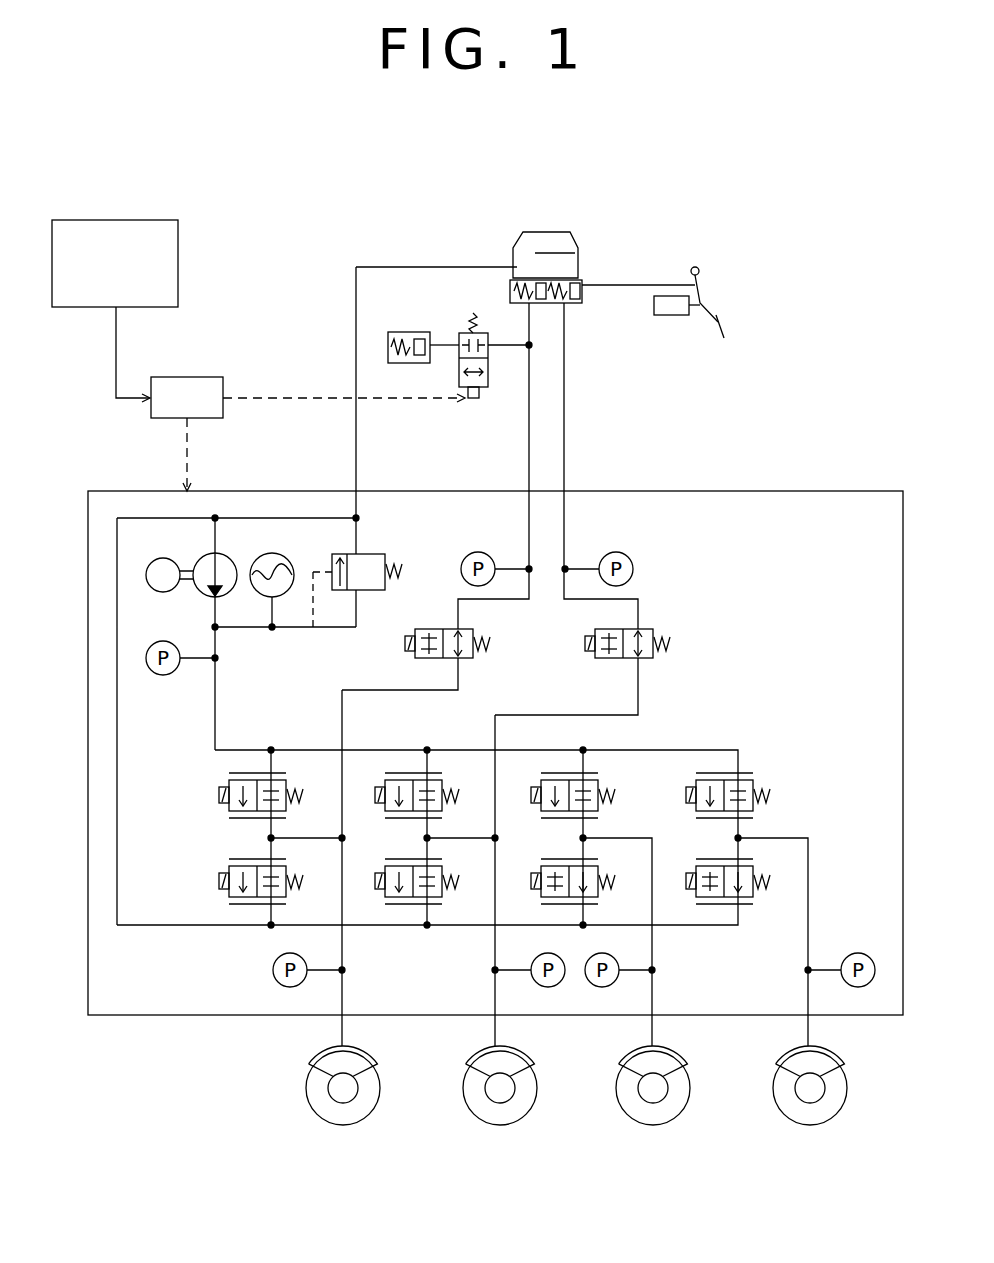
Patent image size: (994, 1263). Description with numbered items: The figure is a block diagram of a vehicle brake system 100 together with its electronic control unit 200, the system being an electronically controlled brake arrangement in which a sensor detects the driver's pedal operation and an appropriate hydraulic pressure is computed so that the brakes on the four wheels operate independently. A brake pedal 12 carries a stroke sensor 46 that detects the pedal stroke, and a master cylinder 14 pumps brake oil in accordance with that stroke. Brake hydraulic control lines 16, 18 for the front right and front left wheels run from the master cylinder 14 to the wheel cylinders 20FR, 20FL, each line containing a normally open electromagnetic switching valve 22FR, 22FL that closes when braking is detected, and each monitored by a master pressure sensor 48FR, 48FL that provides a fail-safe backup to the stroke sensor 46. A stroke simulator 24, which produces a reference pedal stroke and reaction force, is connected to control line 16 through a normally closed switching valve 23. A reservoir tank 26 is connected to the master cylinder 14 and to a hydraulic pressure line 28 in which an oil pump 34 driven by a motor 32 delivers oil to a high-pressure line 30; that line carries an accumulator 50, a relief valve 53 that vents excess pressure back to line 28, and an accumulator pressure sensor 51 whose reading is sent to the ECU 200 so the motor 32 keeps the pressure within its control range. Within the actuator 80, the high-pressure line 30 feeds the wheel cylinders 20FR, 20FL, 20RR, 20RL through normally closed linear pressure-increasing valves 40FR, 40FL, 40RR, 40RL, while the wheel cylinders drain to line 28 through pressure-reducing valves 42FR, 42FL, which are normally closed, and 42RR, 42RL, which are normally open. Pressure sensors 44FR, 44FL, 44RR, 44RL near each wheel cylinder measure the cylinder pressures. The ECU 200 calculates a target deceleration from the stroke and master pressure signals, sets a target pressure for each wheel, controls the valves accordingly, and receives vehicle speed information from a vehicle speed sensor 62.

The brake pedal 12 is at (724, 330).
The master cylinder 14 is at (580, 303).
The brake hydraulic control line 16 is at (513, 602).
The brake hydraulic control line 18 is at (567, 602).
The wheel cylinder 20FR is at (325, 1063).
The wheel cylinder 20FL is at (483, 1063).
The wheel cylinder 20RL is at (638, 1063).
The wheel cylinder 20RR is at (793, 1063).
The electromagnetic switching valve 22FR is at (404, 645).
The electromagnetic switching valve 22FL is at (672, 645).
The switching valve 23 is at (480, 395).
The stroke simulator 24 is at (408, 332).
The reservoir tank 26 is at (545, 230).
The hydraulic pressure line 28 is at (450, 267).
The high-pressure line 30 is at (217, 645).
The motor 32 is at (183, 553).
The oil pump 34 is at (226, 556).
The pressure-increasing valve 40FR is at (218, 795).
The pressure-increasing valve 40FL is at (418, 772).
The pressure-increasing valve 40RL is at (610, 765).
The pressure-increasing valve 40RR is at (745, 770).
The pressure-reducing valve 42FR is at (218, 881).
The pressure-reducing valve 42FL is at (420, 904).
The pressure-reducing valve 42RL is at (552, 866).
The pressure-reducing valve 42RR is at (744, 902).
The pressure sensor 44FR is at (273, 972).
The pressure sensor 44FL is at (538, 985).
The pressure sensor 44RL is at (612, 986).
The pressure sensor 44RR is at (858, 952).
The stroke sensor 46 is at (672, 316).
The master pressure sensor 48FR is at (480, 552).
The master pressure sensor 48FL is at (616, 552).
The accumulator 50 is at (295, 553).
The accumulator pressure sensor 51 is at (163, 676).
The relief valve 53 is at (368, 554).
The vehicle speed sensor 62 is at (178, 263).
The actuator 80 is at (808, 491).
The vehicle brake system 100 is at (521, 1202).
The electronic control unit 200 is at (185, 375).